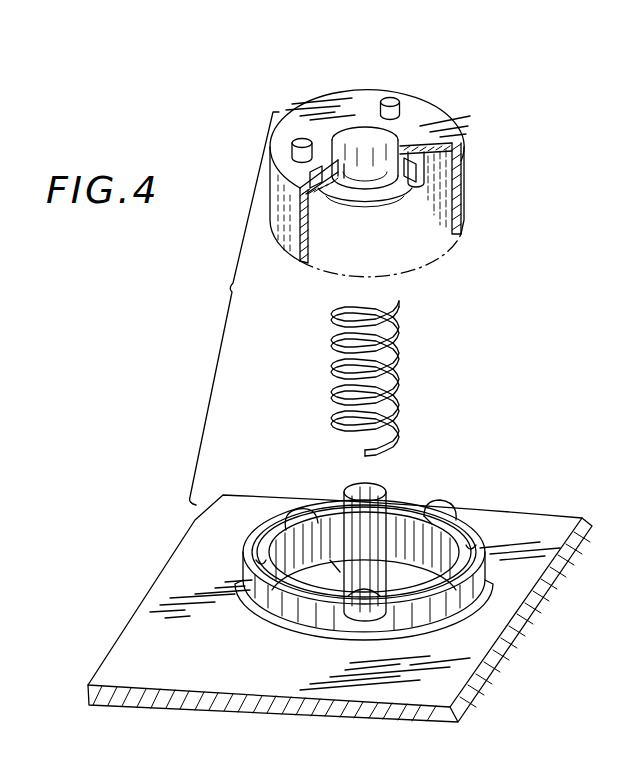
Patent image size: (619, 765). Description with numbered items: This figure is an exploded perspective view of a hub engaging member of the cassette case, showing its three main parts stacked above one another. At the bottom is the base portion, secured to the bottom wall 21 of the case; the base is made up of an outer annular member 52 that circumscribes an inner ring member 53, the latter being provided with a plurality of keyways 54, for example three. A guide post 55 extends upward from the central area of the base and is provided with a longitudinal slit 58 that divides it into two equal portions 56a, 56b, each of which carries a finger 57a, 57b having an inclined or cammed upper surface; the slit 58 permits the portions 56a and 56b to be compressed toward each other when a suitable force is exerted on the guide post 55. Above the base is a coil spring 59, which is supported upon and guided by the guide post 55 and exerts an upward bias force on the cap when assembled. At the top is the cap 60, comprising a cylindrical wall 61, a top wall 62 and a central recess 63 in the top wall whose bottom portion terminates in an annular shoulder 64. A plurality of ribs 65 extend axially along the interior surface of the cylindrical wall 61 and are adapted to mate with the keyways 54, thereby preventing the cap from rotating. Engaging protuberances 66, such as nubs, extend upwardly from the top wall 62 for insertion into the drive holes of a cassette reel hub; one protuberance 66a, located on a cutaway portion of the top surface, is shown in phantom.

The bottom wall 21 is at (138, 630).
The outer annular member 52 is at (430, 636).
The inner ring member 53 is at (470, 548).
The keyways 54 is at (470, 506).
The guide post 55 is at (305, 567).
The guide post portion 56a is at (354, 590).
The guide post portion 56b is at (433, 515).
The finger 57a is at (340, 494).
The finger 57b is at (388, 500).
The longitudinal slit 58 is at (358, 490).
The coil spring 59 is at (400, 340).
The cap 60 is at (452, 108).
The cylindrical wall 61 is at (277, 232).
The top wall 62 is at (342, 97).
The central recess 63 is at (372, 132).
The annular shoulder 64 is at (372, 192).
The ribs 65 is at (315, 185).
The engaging protuberances 66 is at (299, 140).
The engaging protuberance 66a is at (410, 186).